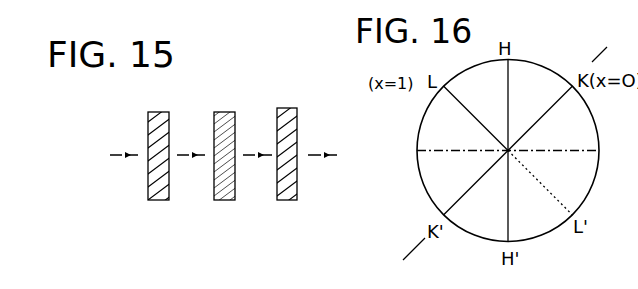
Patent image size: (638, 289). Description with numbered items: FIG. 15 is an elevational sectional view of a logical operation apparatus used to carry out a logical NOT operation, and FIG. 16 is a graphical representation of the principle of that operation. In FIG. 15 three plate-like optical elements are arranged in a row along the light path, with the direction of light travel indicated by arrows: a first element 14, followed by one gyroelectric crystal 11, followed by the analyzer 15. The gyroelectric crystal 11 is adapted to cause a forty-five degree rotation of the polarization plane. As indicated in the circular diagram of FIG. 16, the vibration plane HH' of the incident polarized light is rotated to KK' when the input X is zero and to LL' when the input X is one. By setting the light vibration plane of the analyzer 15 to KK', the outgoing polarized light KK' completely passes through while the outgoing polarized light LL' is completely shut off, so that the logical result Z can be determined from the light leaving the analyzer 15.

The polarizer 14 is at (156, 118).
The gyroelectric crystal 11 is at (223, 118).
The analyzer 15 is at (289, 116).